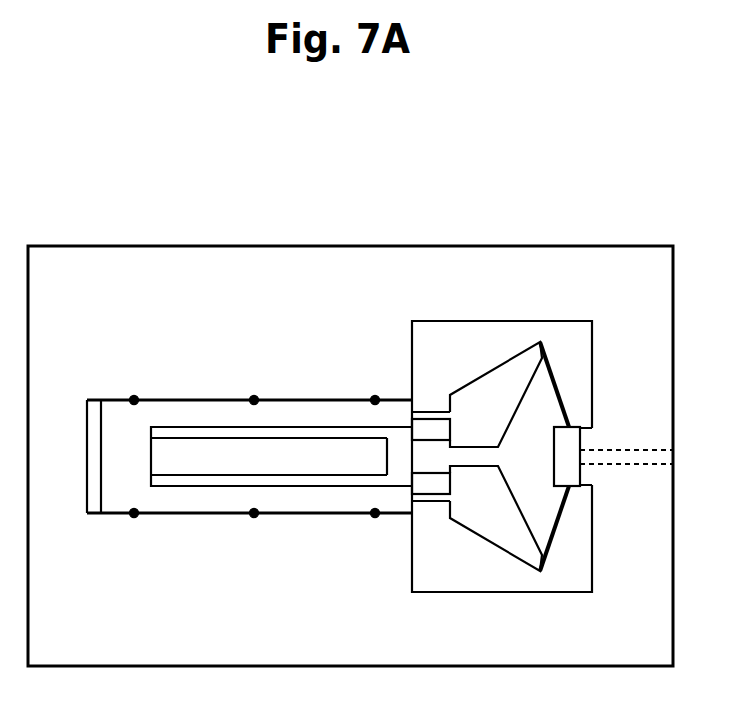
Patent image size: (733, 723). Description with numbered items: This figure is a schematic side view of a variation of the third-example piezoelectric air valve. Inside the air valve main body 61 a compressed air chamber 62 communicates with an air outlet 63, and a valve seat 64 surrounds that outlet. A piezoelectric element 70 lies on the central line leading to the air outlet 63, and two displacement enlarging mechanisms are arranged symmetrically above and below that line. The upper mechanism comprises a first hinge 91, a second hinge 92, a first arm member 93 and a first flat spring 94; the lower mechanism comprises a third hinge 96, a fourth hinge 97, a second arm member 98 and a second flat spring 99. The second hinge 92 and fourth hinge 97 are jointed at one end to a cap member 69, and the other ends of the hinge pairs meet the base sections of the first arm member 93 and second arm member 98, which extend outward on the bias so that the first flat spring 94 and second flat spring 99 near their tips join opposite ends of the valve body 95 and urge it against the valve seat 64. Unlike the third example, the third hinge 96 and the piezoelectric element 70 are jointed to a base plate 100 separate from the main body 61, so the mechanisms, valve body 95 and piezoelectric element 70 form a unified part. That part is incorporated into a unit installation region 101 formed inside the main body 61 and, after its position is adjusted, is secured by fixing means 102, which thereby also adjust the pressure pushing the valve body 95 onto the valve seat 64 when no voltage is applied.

The air valve main body 61 is at (273, 258).
The compressed air chamber 62 is at (438, 327).
The air outlet 63 is at (655, 452).
The valve seat 64 is at (586, 433).
The cap member 69 is at (400, 466).
The piezoelectric element 70 is at (202, 458).
The first hinge 91 is at (430, 410).
The second hinge 92 is at (433, 431).
The first arm member 93 is at (512, 370).
The first flat spring 94 is at (555, 360).
The valve body 95 is at (573, 472).
The third hinge 96 is at (435, 503).
The fourth hinge 97 is at (428, 482).
The second arm member 98 is at (505, 530).
The second flat spring 99 is at (557, 532).
The base plate 100 is at (315, 500).
The unit installation region 101 is at (88, 428).
The fixing means 102 is at (252, 392).